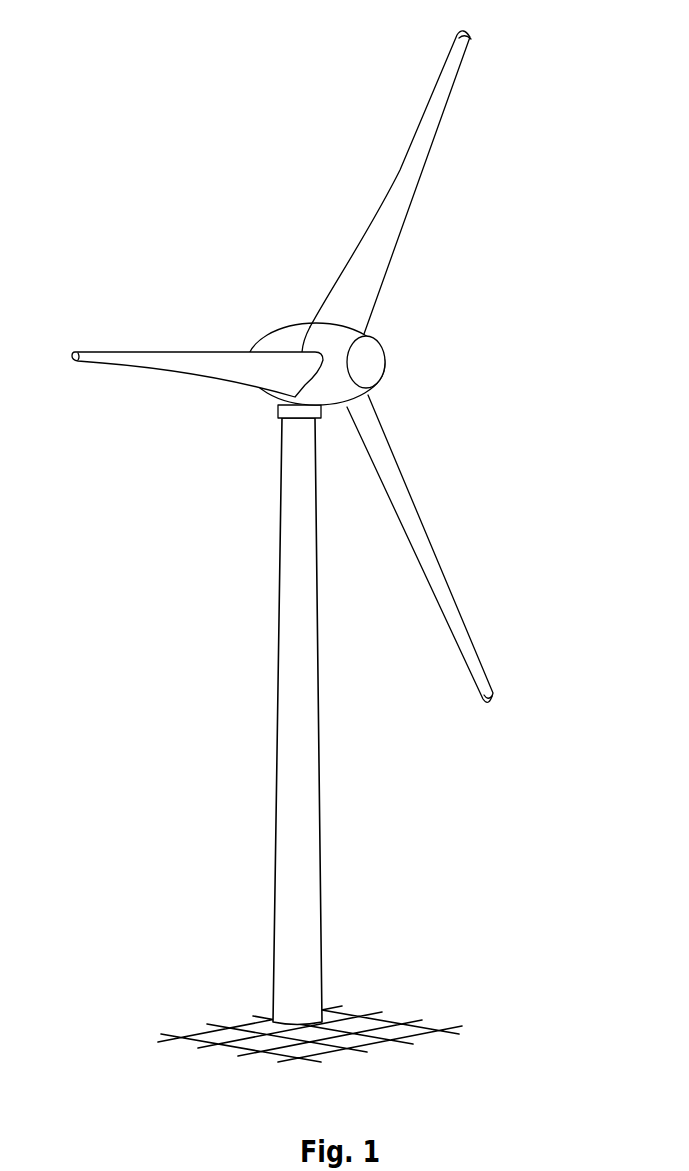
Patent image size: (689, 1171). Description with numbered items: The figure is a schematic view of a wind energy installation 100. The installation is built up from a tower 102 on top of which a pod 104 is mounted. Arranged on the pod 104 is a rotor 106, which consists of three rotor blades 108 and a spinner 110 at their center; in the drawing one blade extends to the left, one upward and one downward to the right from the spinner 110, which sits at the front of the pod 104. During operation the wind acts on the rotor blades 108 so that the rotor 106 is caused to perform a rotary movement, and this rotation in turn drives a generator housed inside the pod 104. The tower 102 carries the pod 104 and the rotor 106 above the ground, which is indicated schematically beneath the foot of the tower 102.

The wind energy installation 100 is at (324, 546).
The tower 102 is at (303, 812).
The pod 104 is at (290, 338).
The rotor 106 is at (324, 366).
The rotor blades 108 is at (423, 140).
The spinner 110 is at (372, 362).